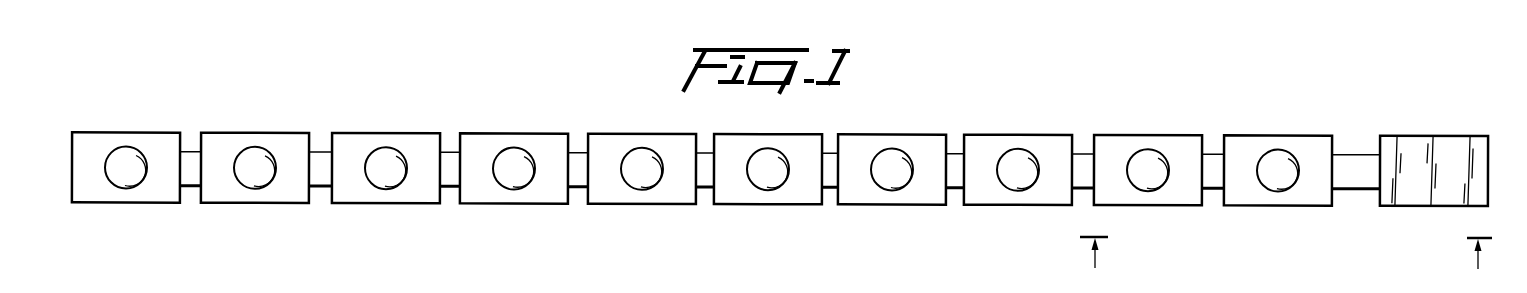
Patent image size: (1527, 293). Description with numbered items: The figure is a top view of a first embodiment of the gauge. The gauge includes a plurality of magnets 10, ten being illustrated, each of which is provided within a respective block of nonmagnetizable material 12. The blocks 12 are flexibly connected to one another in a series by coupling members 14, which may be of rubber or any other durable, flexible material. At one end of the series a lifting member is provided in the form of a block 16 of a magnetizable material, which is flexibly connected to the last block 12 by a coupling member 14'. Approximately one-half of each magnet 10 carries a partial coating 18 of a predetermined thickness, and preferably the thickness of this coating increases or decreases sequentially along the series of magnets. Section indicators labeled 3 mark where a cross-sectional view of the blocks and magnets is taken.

The magnet 10 is at (249, 152).
The block of nonmagnetizable material 12 is at (288, 133).
The coupling member 14 is at (721, 164).
The coupling member 14' is at (1356, 140).
The block of magnetizable material 16 is at (1427, 134).
The partial coating 18 is at (256, 188).
The section line 3- 3 is at (1286, 241).